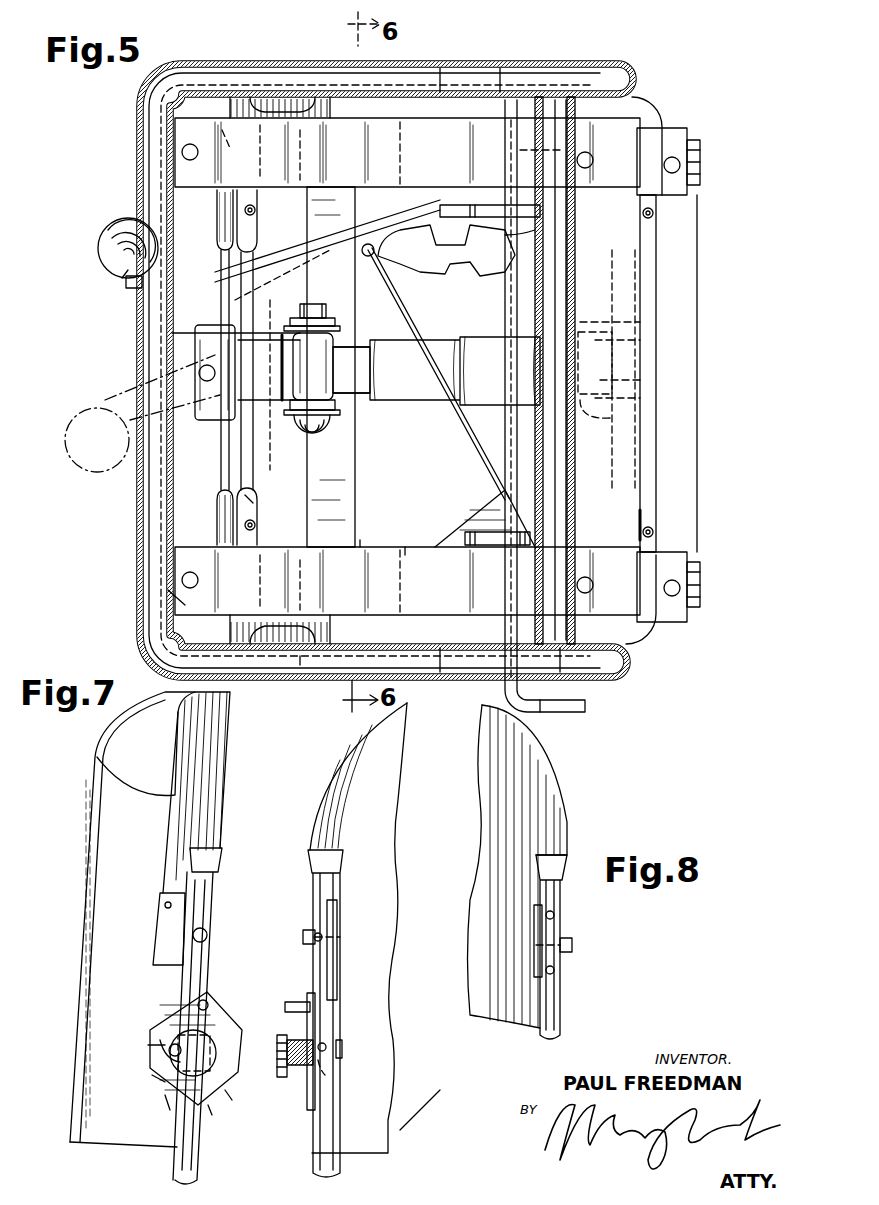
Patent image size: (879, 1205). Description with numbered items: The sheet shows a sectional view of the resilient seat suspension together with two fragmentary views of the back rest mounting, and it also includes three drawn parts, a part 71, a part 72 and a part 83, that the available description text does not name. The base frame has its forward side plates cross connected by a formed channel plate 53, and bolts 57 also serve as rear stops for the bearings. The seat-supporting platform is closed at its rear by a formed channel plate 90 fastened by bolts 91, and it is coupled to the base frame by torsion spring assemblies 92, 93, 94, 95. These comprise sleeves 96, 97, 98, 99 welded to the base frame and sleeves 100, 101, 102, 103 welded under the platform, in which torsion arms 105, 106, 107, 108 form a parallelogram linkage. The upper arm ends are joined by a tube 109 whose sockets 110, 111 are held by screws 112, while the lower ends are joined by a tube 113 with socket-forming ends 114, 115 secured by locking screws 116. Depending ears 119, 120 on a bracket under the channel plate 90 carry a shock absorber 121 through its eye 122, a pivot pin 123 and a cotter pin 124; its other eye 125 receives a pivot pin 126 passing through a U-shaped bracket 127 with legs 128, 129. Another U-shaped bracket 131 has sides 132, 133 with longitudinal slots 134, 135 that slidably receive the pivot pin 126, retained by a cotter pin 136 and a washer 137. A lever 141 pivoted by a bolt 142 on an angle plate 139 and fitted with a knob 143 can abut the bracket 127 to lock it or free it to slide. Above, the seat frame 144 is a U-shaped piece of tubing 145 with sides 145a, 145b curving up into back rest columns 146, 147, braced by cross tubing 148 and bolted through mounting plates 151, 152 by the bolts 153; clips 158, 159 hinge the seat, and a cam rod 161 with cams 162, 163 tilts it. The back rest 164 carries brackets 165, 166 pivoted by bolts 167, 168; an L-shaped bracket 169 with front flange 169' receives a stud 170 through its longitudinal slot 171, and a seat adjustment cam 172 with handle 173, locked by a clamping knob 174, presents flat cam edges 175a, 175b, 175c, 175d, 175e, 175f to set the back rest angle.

In FIG. 5, the formed channel plate 53 is at (310, 500).
In FIG. 5, the bolts 57 is at (660, 628).
In FIG. 5, the cam plate 71 is at (455, 275).
In FIG. 5, the triangular bracket 72 is at (495, 505).
In FIG. 5, the connecting rod 83 is at (405, 320).
In FIG. 5, the formed channel plate 90 is at (640, 295).
In FIG. 5, the bolts 91 is at (588, 542).
In FIG. 5, the torsion spring assembly 92 is at (292, 670).
In FIG. 5, the torsion spring assembly 93 is at (640, 650).
In FIG. 5, the torsion spring assembly 94 is at (600, 45).
In FIG. 5, the torsion spring assembly 95 is at (282, 80).
In FIG. 5, the sleeve 96 is at (364, 540).
In FIG. 5, the sleeve 97 is at (660, 590).
In FIG. 5, the sleeve 98 is at (365, 140).
In FIG. 5, the sleeve 99 is at (660, 145).
In FIG. 5, the sleeve 100 is at (221, 572).
In FIG. 5, the sleeve 101 is at (504, 590).
In FIG. 5, the sleeve 102 is at (221, 148).
In FIG. 5, the sleeve 103 is at (520, 155).
In FIG. 5, the torsion arm 105 is at (260, 655).
In FIG. 5, the torsion arm 106 is at (598, 670).
In FIG. 5, the torsion arm 107 is at (645, 100).
In FIG. 5, the torsion arm 108 is at (262, 95).
In FIG. 5, the tube 109 is at (270, 468).
In FIG. 5, the socket 110 is at (258, 235).
In FIG. 5, the socket 111 is at (255, 503).
In FIG. 5, the screws 112 is at (272, 525).
In FIG. 5, the tube 113 is at (640, 380).
In FIG. 5, the socket-forming end 114 is at (660, 232).
In FIG. 5, the socket-forming end 115 is at (645, 507).
In FIG. 5, the locking screws 116 is at (705, 530).
In FIG. 5, the depending ear 119 is at (640, 340).
In FIG. 5, the depending ear 120 is at (640, 416).
In FIG. 5, the shock absorber 121 is at (432, 400).
In FIG. 5, the eye 122 is at (640, 398).
In FIG. 5, the pivot pin 123 is at (598, 330).
In FIG. 5, the cotter pin 124 is at (640, 322).
In FIG. 5, the eye 125 is at (333, 360).
In FIG. 5, the pivot pin 126 is at (318, 430).
In FIG. 5, the U-shaped bracket 127 is at (292, 318).
In FIG. 5, the leg 128 is at (350, 345).
In FIG. 5, the leg 129 is at (340, 405).
In FIG. 5, the U-shaped bracket 131 is at (205, 420).
In FIG. 5, the side 132 is at (280, 320).
In FIG. 5, the side 133 is at (275, 410).
In FIG. 5, the longitudinal slot 134 is at (215, 278).
In FIG. 5, the longitudinal slot 135 is at (278, 420).
In FIG. 5, the cotter pin 136 is at (326, 290).
In FIG. 5, the washer 137 is at (366, 258).
In FIG. 5, the angle plate 139 is at (172, 333).
In FIG. 5, the lever 141 is at (132, 385).
In FIG. 5, the bolt 142 is at (205, 380).
In FIG. 5, the knob 143 is at (88, 455).
In FIG. 5, the seat frame 144 is at (525, 73).
In FIG. 5, the U-shaped piece of tubing 145 is at (500, 62).
In FIG. 5, the side 145a is at (450, 62).
In FIG. 5, the side 145b is at (455, 676).
In FIG. 7, the back rest column 146 is at (355, 1010).
In FIG. 8, the back rest column 147 is at (560, 985).
In FIG. 5, the cross tubing 148 is at (490, 258).
In FIG. 5, the mounting plate 151 is at (425, 127).
In FIG. 5, the mounting plate 152 is at (405, 545).
In FIG. 5, the bolts 153 is at (182, 580).
In FIG. 5, the clip 158 is at (124, 290).
In FIG. 5, the clip 159 is at (170, 592).
In FIG. 5, the cam rod 161 is at (560, 714).
In FIG. 5, the cam 162 is at (478, 203).
In FIG. 5, the cam 163 is at (480, 545).
In FIG. 7, the back rest 164 is at (215, 800).
In FIG. 7, the bracket 165 is at (342, 910).
In FIG. 8, the bracket 166 is at (536, 915).
In FIG. 7, the bolt 167 is at (352, 925).
In FIG. 8, the bolt 168 is at (572, 942).
In FIG. 7, the L-shaped bracket 169 is at (351, 1080).
In FIG. 7, the front flange 169' is at (237, 1034).
In FIG. 7, the stud 170 is at (342, 1050).
In FIG. 7, the longitudinal slot 171 is at (160, 1040).
In FIG. 7, the seat adjustment cam 172 is at (345, 1112).
In FIG. 7, the handle 173 is at (285, 980).
In FIG. 7, the clamping knob 174 is at (216, 1053).
In FIG. 7, the flat cam edge 175a is at (148, 1045).
In FIG. 7, the flat cam edge 175b is at (152, 1078).
In FIG. 7, the flat cam edge 175c is at (170, 1110).
In FIG. 7, the flat cam edge 175d is at (215, 1120).
In FIG. 7, the flat cam edge 175e is at (232, 1100).
In FIG. 7, the flat cam edge 175f is at (258, 1045).